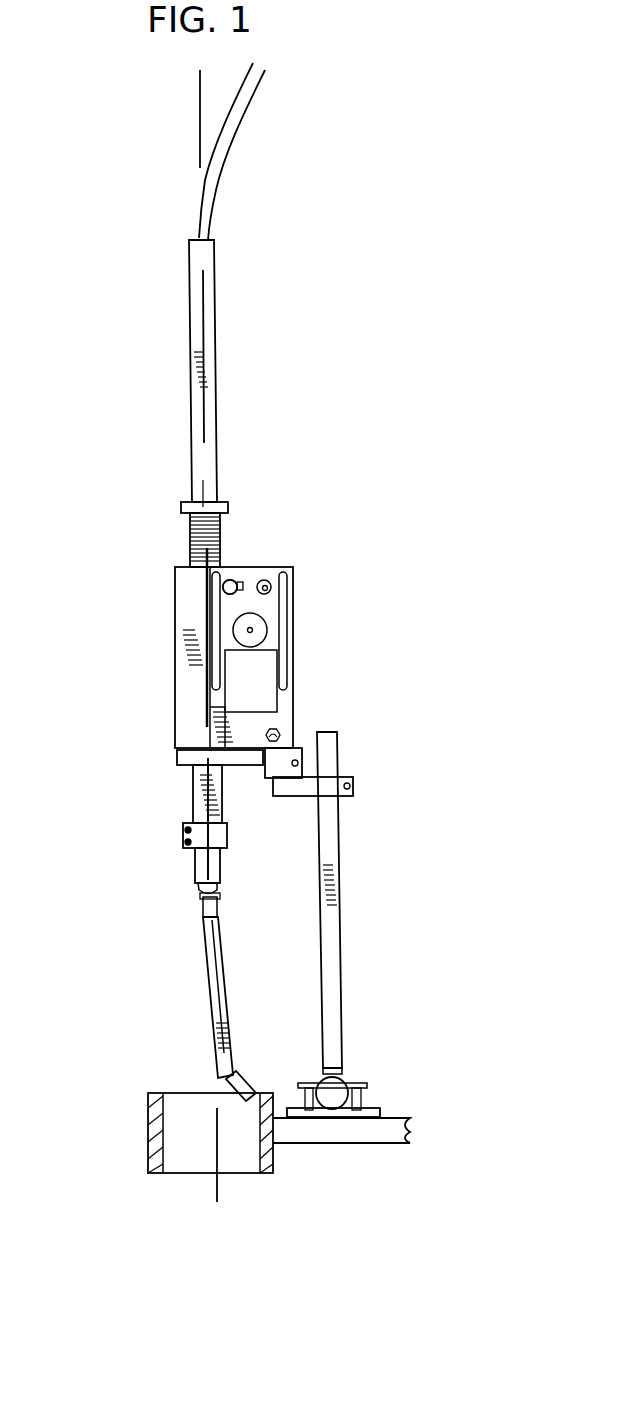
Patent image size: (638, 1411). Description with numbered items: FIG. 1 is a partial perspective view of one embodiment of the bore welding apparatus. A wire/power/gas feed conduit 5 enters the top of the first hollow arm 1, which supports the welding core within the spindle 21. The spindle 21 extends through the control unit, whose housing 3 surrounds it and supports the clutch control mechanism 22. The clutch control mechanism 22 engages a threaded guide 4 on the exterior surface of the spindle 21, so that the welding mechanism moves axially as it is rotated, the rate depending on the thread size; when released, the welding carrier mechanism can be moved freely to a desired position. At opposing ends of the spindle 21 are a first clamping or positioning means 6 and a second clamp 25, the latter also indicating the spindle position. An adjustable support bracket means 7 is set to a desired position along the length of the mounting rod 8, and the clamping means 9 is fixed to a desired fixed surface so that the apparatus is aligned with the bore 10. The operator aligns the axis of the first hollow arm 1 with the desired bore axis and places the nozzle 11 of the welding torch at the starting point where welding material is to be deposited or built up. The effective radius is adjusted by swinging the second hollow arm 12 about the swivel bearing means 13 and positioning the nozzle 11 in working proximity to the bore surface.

The first hollow arm 1 is at (208, 427).
The housing 3 is at (185, 655).
The threaded guide 4 is at (192, 538).
The wire/power/gas feed conduit 5 is at (223, 145).
The first clamping or positioning means 6 is at (227, 503).
The adjustable support bracket means 7 is at (352, 778).
The mounting rod 8 is at (330, 968).
The clamping means 9 is at (345, 1078).
The bore 10 is at (263, 1168).
The nozzle 11 is at (247, 1095).
The second hollow arm 12 is at (215, 1005).
The swivel bearing means 13 is at (148, 937).
The spindle 21 is at (193, 802).
The clutch control mechanism 22 is at (257, 568).
The second clamp 25 is at (200, 837).